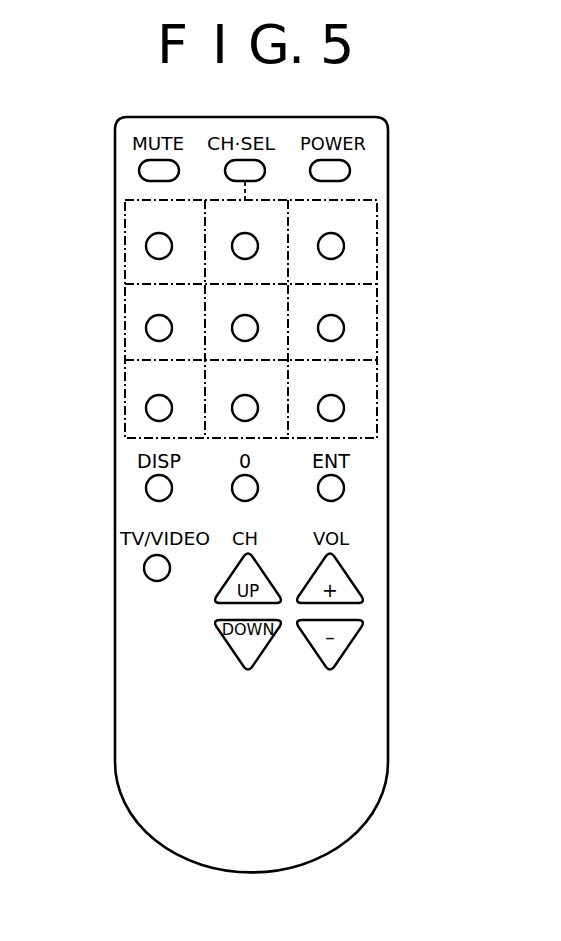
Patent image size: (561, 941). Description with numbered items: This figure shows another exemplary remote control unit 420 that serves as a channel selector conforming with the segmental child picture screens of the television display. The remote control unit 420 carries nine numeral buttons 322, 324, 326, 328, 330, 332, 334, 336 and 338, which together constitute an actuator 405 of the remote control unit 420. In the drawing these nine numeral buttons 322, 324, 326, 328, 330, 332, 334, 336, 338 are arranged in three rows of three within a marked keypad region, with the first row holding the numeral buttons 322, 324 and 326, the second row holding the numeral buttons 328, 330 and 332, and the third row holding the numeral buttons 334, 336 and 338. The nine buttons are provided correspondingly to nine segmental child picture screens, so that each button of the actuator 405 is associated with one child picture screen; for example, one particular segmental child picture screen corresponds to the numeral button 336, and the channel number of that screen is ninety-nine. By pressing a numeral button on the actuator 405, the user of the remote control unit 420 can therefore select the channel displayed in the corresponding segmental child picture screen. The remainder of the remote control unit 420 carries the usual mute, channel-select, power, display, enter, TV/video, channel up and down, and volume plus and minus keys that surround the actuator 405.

The actuator 405 is at (94, 177).
The remote control unit 420 is at (387, 400).
The numeral button 322 is at (147, 242).
The numeral button 324 is at (232, 246).
The numeral button 326 is at (344, 243).
The numeral button 328 is at (147, 326).
The numeral button 330 is at (232, 328).
The numeral button 332 is at (344, 326).
The numeral button 334 is at (147, 406).
The numeral button 336 is at (233, 410).
The numeral button 338 is at (340, 418).